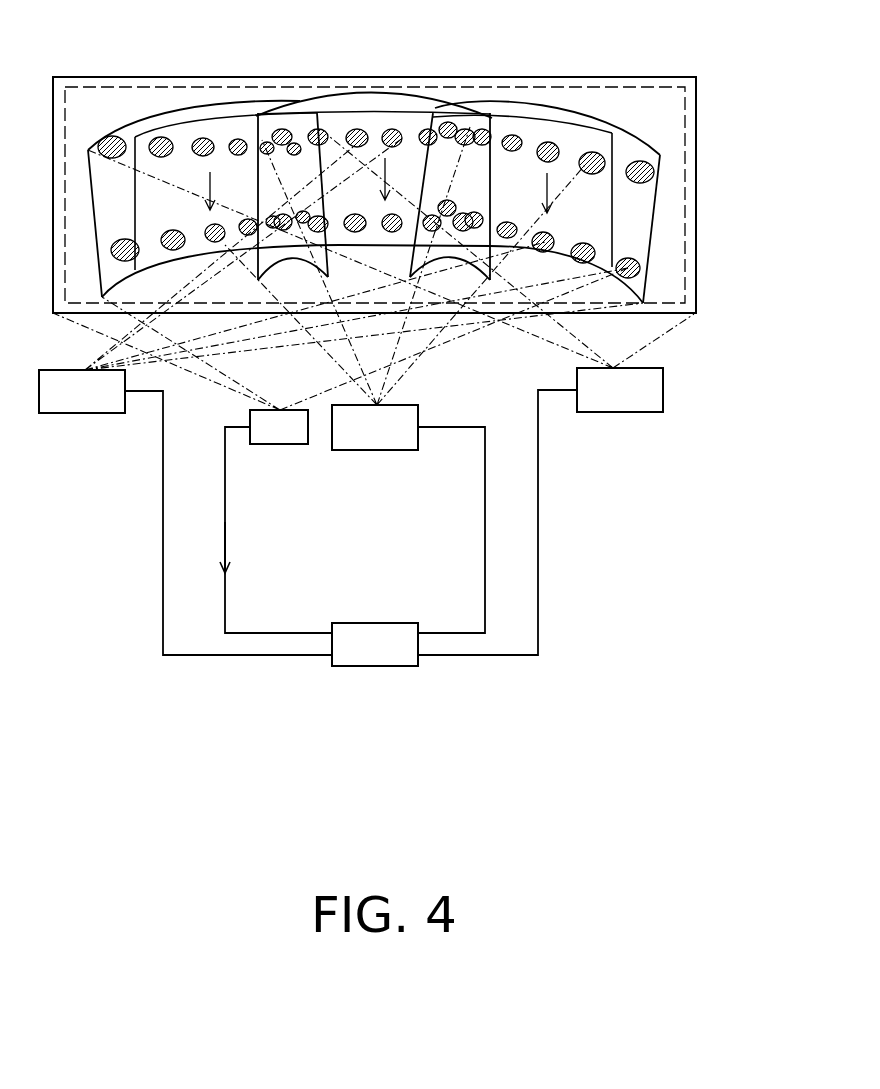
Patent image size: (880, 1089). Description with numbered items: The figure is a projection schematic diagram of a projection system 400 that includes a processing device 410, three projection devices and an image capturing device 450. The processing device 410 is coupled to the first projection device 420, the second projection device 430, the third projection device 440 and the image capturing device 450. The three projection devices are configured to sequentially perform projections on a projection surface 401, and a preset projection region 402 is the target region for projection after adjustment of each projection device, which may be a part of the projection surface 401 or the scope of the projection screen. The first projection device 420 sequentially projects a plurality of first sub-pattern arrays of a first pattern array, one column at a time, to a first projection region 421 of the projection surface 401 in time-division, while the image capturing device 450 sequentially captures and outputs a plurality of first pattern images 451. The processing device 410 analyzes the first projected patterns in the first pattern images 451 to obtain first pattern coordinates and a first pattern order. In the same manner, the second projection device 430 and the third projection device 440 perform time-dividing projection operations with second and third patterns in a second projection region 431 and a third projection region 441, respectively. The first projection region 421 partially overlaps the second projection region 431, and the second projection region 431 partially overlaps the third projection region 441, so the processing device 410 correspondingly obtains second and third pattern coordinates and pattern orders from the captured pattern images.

The projection system 400 is at (384, 370).
The projection surface 401 is at (663, 76).
The preset projection region 402 is at (374, 159).
The processing device 410 is at (375, 667).
The first projection device 420 is at (620, 413).
The first projection region 421 is at (160, 110).
The second projection device 430 is at (375, 451).
The second projection region 431 is at (420, 95).
The third projection device 440 is at (80, 414).
The third projection region 441 is at (587, 107).
The image capturing device 450 is at (278, 445).
The first pattern images 451 is at (303, 547).